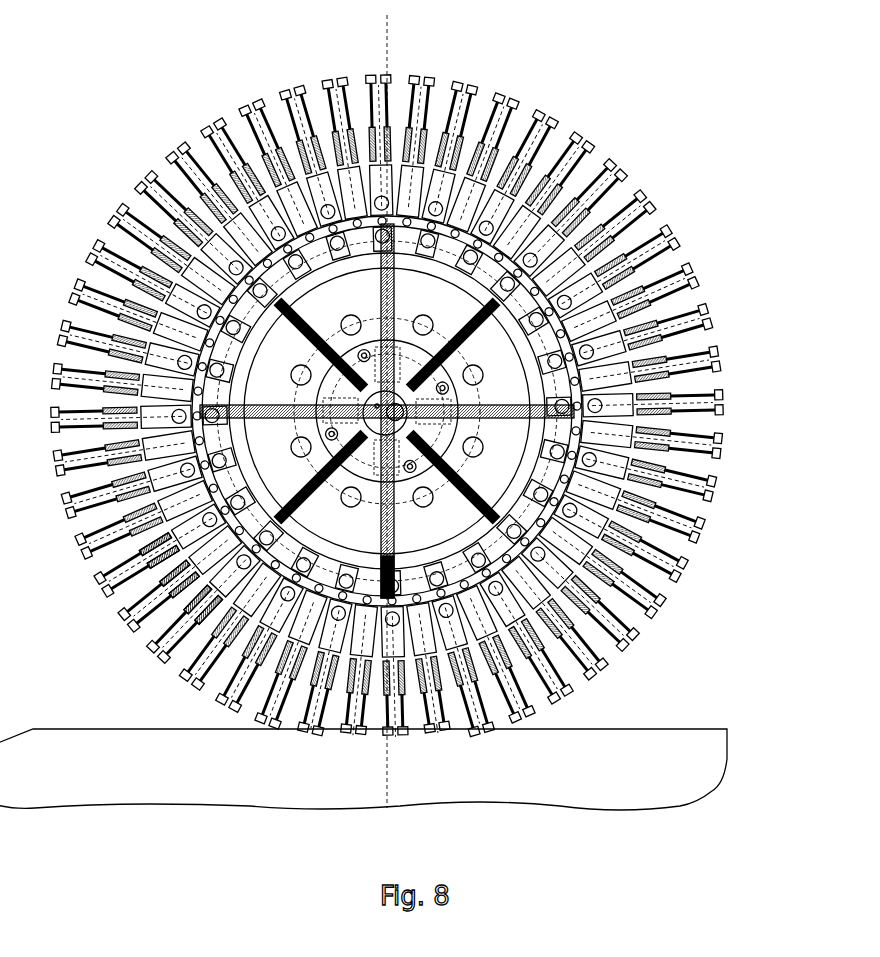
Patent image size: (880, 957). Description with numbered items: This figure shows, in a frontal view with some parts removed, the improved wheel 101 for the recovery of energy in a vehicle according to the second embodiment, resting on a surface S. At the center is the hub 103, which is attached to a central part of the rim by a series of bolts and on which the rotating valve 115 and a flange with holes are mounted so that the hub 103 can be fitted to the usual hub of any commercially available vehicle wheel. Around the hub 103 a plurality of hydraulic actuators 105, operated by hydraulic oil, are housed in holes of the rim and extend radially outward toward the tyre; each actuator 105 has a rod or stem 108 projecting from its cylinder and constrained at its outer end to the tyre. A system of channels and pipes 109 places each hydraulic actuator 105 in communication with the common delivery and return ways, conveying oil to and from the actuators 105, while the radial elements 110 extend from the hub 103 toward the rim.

The improved wheel 101 is at (163, 73).
The hub 103 is at (318, 372).
The hydraulic actuators 105 is at (507, 98).
The rod or stem 108 is at (140, 562).
The channels and pipes 109 is at (345, 317).
The cross bars 110 is at (395, 290).
The rotating valve 115 is at (462, 452).
The surface S is at (690, 728).